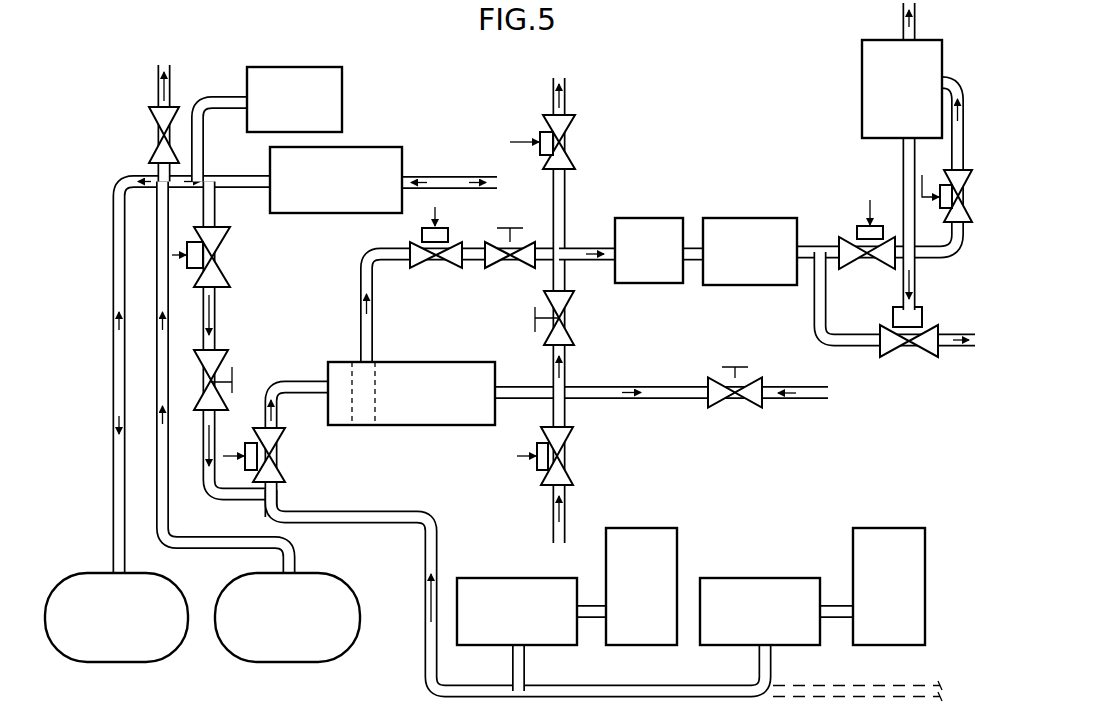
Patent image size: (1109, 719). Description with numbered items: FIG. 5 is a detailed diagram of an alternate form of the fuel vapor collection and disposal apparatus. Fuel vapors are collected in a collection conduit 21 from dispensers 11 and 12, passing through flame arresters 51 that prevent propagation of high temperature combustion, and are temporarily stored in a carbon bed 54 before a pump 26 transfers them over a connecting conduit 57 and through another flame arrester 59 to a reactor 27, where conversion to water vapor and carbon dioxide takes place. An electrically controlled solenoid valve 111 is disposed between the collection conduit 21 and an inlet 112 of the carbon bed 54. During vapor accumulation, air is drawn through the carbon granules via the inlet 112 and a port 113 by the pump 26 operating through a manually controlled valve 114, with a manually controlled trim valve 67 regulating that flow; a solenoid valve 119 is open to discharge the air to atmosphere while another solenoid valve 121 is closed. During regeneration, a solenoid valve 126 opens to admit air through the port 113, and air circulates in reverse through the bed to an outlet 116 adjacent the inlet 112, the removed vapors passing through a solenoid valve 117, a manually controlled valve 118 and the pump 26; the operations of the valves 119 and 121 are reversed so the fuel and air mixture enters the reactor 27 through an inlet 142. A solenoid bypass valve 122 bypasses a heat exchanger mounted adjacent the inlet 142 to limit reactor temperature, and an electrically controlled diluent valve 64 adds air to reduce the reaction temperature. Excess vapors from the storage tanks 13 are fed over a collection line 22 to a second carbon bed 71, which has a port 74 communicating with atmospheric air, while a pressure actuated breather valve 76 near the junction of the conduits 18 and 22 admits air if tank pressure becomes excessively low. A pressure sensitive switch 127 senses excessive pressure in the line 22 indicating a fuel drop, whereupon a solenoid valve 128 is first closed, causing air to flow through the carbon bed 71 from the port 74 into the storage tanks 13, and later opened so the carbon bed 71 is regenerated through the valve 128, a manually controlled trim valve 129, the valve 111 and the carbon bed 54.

The dispenser 11 is at (667, 536).
The dispenser 12 is at (910, 541).
The storage tank 13 is at (154, 647).
The conduit 18 is at (114, 333).
The vapor collection conduit 21 is at (361, 511).
The collection line 22 is at (206, 176).
The air pump 26 is at (631, 226).
The reactor 27 is at (868, 115).
The flame arrester 51 is at (509, 578).
The carbon bed 54 is at (418, 362).
The connecting conduit 57 is at (568, 246).
The flame arrester 59 is at (745, 224).
The diluent valve 64 is at (565, 131).
The trim valve 67 is at (757, 382).
The carbon bed 71 is at (392, 152).
The port 74 is at (405, 180).
The breather valve 76 is at (152, 117).
The solenoid valve 111 is at (275, 443).
The inlet 112 is at (326, 383).
The port 113 is at (497, 385).
The manually controlled valve 114 is at (566, 340).
The outlet 116 is at (377, 362).
The solenoid valve 117 is at (449, 233).
The manually controlled valve 118 is at (522, 250).
The solenoid valve 119 is at (915, 318).
The solenoid valve 121 is at (857, 238).
The bypass valve 122 is at (950, 175).
The solenoid valve 126 is at (561, 480).
The pressure sensitive switch 127 is at (335, 80).
The solenoid valve 128 is at (220, 281).
The trim valve 129 is at (220, 357).
The inlet 142 is at (900, 141).